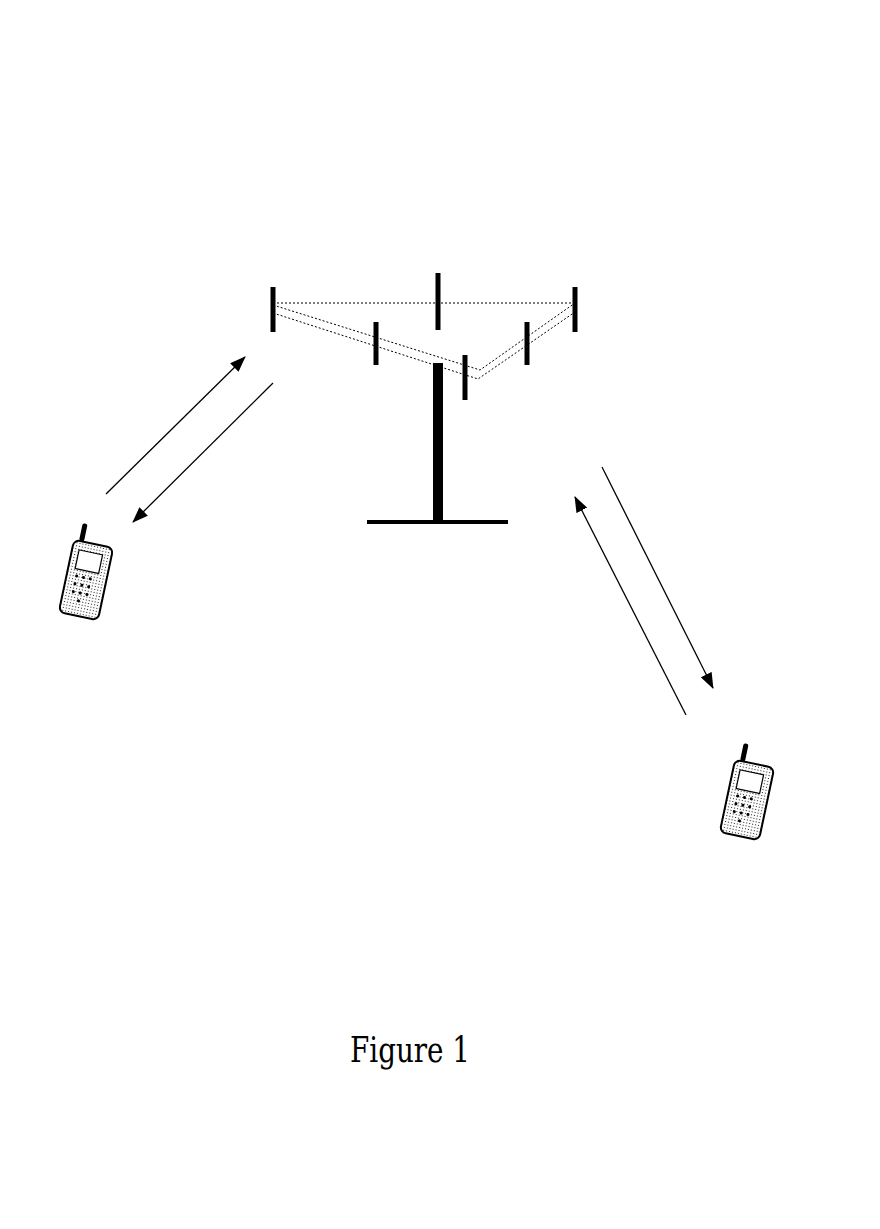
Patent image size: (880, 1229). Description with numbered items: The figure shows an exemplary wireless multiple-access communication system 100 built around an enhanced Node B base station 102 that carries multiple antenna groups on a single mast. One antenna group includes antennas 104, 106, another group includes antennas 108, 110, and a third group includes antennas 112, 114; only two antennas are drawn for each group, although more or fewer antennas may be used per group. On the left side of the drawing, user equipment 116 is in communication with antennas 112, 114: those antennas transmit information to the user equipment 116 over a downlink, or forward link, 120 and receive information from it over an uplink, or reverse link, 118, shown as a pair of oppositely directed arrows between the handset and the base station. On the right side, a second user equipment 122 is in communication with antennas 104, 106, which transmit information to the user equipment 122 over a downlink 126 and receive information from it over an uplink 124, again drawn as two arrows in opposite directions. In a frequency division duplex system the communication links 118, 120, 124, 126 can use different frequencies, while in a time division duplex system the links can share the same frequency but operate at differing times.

The wireless multiple-access communication system 100 is at (658, 92).
The enhanced Node B base station 102 is at (415, 474).
The antenna 104 is at (526, 388).
The antenna 106 is at (591, 351).
The antenna 108 is at (637, 309).
The antenna 110 is at (496, 280).
The antenna 112 is at (225, 287).
The antenna 114 is at (333, 372).
The user equipment 116 is at (129, 596).
The uplink 118 is at (160, 425).
The downlink 120 is at (203, 471).
The user equipment 122 is at (709, 812).
The uplink 124 is at (609, 606).
The downlink 126 is at (677, 577).